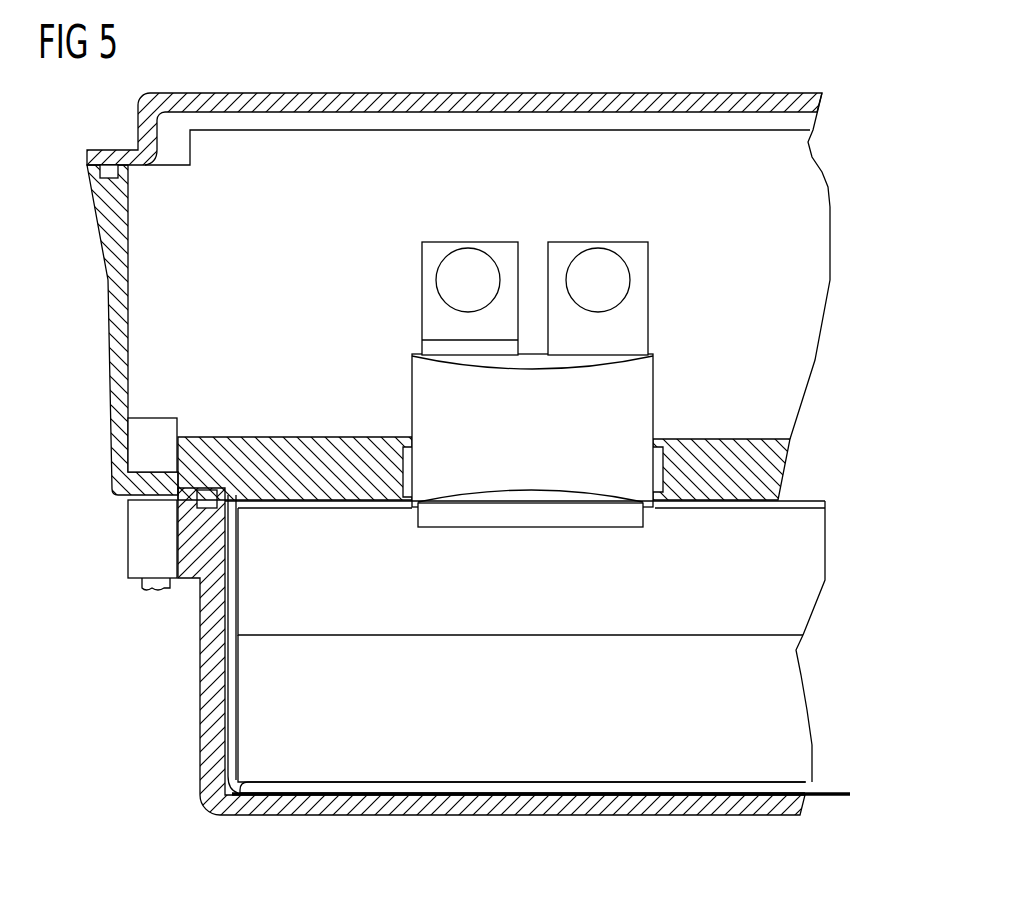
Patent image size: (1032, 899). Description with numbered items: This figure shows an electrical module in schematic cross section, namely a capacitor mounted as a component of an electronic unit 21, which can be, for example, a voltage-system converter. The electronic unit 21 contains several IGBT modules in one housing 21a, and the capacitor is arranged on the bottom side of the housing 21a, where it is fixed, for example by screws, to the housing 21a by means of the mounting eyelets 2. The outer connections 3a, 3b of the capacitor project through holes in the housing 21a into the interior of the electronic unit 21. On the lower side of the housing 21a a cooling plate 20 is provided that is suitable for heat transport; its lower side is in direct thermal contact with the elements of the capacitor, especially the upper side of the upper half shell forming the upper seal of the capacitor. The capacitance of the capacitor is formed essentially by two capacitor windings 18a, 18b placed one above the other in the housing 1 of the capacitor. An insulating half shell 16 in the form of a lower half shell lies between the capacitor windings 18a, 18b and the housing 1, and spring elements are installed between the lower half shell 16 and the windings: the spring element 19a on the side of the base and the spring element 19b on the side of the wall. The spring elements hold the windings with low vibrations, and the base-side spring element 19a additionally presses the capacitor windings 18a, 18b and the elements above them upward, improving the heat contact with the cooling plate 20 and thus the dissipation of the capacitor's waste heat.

The housing of the capacitor 1 is at (596, 816).
The mounting eyelets 2 is at (140, 547).
The outer connection 3a is at (433, 257).
The outer connection 3b is at (648, 259).
The insulating half shell 16 is at (833, 794).
The capacitor winding 18a is at (788, 683).
The capacitor winding 18b is at (800, 563).
The spring element 19a is at (500, 786).
The spring element 19b is at (230, 696).
The cooling plate 20 is at (742, 447).
The electronic unit 21 is at (798, 182).
The housing 21a is at (96, 221).